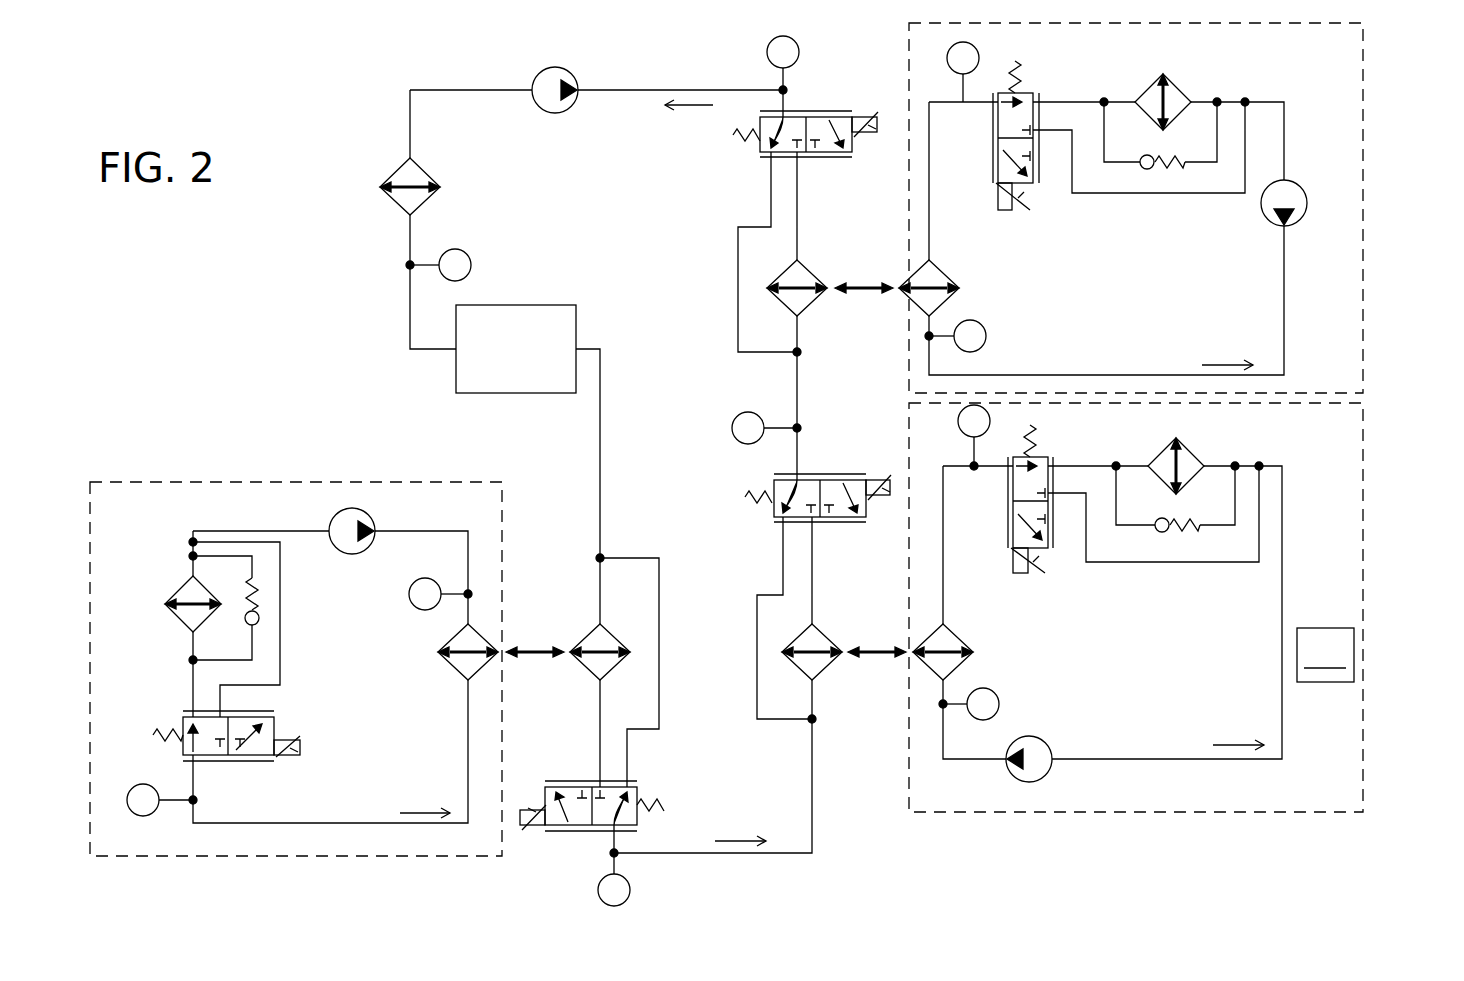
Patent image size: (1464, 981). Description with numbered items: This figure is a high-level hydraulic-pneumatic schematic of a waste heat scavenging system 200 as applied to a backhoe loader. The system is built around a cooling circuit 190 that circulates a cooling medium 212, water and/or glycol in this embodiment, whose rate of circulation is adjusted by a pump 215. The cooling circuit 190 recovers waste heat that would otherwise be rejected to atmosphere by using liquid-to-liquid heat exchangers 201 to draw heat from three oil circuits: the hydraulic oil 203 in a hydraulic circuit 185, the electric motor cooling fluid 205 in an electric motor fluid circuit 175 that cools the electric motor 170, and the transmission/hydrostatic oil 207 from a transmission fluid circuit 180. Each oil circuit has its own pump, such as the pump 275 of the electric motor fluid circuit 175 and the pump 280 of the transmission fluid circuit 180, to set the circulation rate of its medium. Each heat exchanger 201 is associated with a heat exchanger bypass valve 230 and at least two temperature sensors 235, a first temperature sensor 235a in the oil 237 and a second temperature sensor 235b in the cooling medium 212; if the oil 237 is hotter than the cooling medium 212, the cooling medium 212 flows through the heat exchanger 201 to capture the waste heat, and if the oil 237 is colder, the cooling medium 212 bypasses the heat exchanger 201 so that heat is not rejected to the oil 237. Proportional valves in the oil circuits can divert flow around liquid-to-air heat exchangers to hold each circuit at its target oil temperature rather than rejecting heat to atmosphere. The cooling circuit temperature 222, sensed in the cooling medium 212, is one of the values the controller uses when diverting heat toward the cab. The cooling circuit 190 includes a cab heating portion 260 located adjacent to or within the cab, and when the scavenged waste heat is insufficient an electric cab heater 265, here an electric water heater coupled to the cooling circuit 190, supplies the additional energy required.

The electric motor 170 is at (1325, 655).
The electric motor fluid circuit 175 is at (1214, 822).
The transmission fluid circuit 180 is at (286, 458).
The hydraulic circuit 185 is at (1372, 115).
The cooling circuit 190 is at (633, 78).
The waste heat scavenging system 200 is at (309, 84).
The liquid-to-liquid heat exchanger 201 is at (912, 312).
The hydraulic oil 203 is at (1224, 365).
The electric motor cooling fluid 205 is at (1234, 745).
The transmission/hydrostatic oil 207 is at (420, 813).
The cooling medium 212 is at (703, 105).
The pump 215 is at (564, 122).
The cooling circuit temperature 222 is at (463, 246).
The heat exchanger bypass valve 230 is at (817, 96).
The temperature sensors 235 is at (1306, 194).
The first temperature sensor 235a is at (406, 598).
The second temperature sensor 235b is at (766, 44).
The oil 237 is at (832, 589).
The cab heating portion 260 is at (438, 172).
The electric cab heater 265 is at (516, 300).
The pump 275 is at (1054, 778).
The pump 280 is at (329, 518).